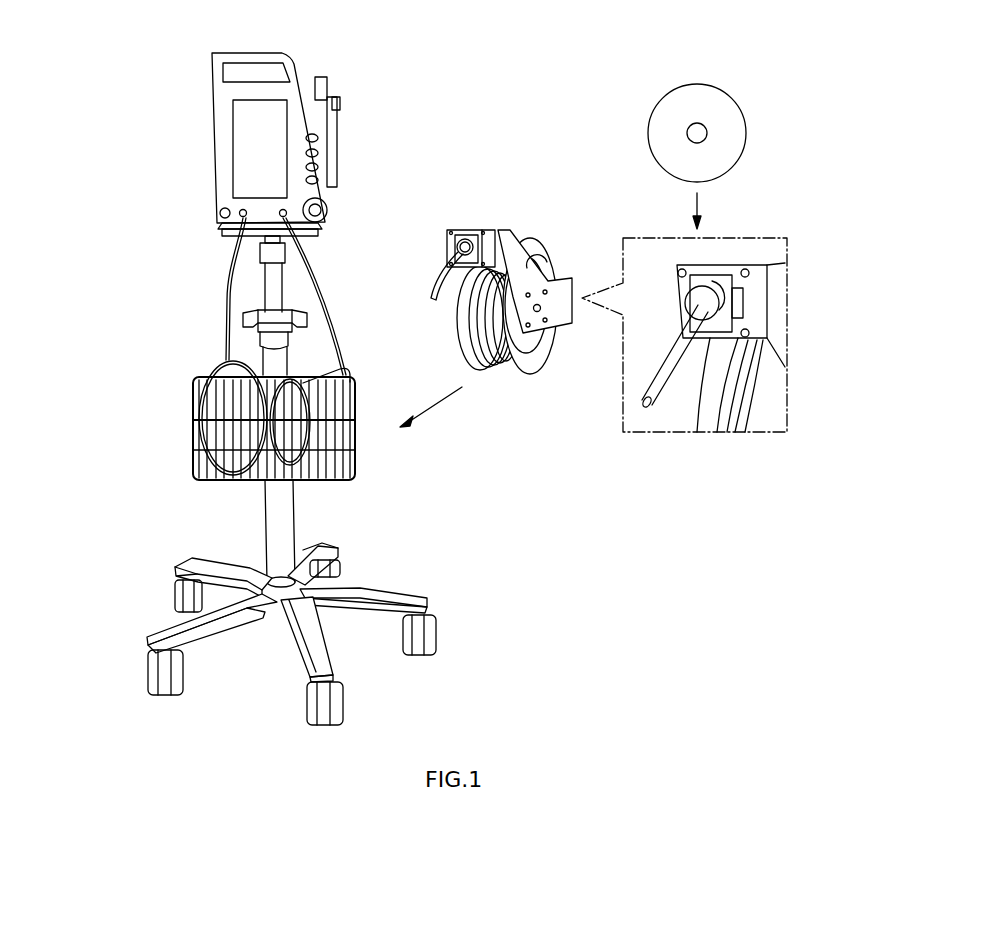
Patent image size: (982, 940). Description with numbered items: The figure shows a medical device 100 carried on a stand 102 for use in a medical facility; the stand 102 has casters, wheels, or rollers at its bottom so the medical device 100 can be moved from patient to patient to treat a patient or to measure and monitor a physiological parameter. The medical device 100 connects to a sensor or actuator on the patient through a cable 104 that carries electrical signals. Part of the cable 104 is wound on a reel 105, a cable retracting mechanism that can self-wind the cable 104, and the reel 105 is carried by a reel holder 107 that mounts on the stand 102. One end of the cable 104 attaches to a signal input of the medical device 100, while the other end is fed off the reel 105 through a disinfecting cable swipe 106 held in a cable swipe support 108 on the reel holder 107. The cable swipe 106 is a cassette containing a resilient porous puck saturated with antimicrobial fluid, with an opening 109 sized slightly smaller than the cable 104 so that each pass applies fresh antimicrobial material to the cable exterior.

The medical device 100 is at (220, 128).
The stand 102 is at (267, 342).
The cable 104 is at (501, 299).
The reel 105 is at (552, 238).
The disinfecting cable swipe 106 is at (758, 215).
The reel holder 107 is at (502, 232).
The cable swipe support 108 is at (767, 316).
The opening 109 is at (707, 128).